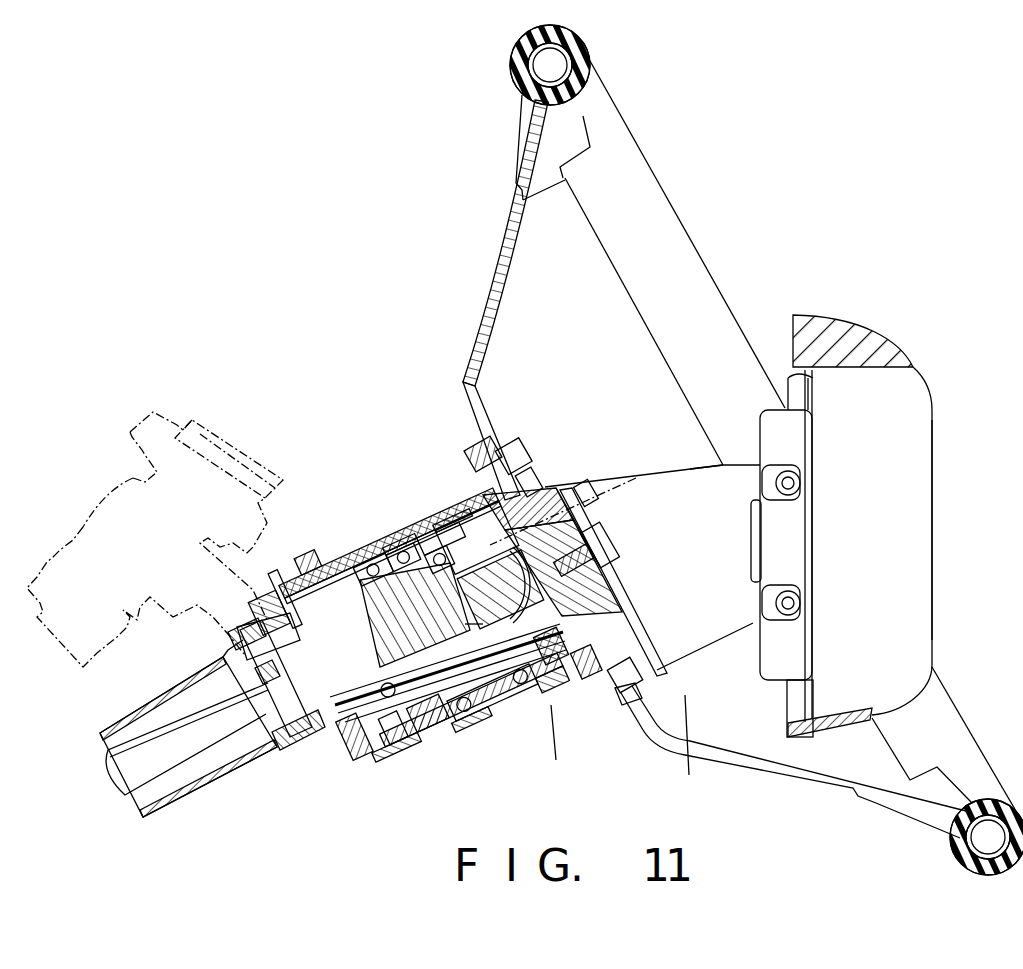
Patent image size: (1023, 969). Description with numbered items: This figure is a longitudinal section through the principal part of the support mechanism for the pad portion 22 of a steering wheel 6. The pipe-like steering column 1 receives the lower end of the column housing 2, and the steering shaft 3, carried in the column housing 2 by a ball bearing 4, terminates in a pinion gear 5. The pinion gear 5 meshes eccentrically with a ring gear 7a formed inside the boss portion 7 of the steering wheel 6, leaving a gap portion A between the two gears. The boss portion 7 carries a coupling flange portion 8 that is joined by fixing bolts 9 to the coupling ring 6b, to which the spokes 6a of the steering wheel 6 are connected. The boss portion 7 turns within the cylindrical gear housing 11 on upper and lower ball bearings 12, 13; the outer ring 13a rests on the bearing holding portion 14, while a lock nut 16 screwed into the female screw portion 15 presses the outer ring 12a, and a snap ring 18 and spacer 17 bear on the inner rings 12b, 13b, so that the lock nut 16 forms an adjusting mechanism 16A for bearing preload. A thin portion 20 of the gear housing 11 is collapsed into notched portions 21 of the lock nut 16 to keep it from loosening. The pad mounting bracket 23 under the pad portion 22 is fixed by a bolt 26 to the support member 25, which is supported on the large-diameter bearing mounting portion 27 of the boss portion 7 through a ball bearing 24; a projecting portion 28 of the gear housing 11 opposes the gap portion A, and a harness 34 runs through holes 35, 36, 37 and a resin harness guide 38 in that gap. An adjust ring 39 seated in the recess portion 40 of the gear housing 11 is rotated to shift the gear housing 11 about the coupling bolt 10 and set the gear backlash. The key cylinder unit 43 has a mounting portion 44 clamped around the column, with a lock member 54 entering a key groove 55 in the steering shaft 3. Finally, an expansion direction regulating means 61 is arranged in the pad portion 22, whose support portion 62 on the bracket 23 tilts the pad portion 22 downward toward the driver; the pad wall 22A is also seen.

The steering column 1 is at (197, 796).
The column housing 2 is at (356, 733).
The steering shaft 3 is at (148, 747).
The ball bearing 4 is at (300, 572).
The pinion gear 5 is at (398, 650).
The steering wheel 6 is at (960, 852).
The spokes 6a is at (498, 262).
The coupling ring 6b is at (630, 702).
The boss portion 7 is at (590, 658).
The ring gear 7a is at (498, 589).
The coupling flange portion 8 is at (470, 435).
The fixing bolts 9 is at (515, 440).
The coupling bolt 10 is at (290, 600).
The gear housing 11 is at (326, 548).
The ball bearing 12 is at (447, 545).
The outer ring 12a is at (457, 535).
The inner ring 12b is at (440, 560).
The ball bearing 13 is at (400, 565).
The outer ring 13a is at (370, 568).
The inner ring 13b is at (405, 555).
The bearing holding portion 14 is at (346, 562).
The female screw portion 15 is at (536, 690).
The lock nut 16 is at (565, 682).
The adjusting mechanism 16A is at (570, 745).
The spacer 17 is at (470, 705).
The snap ring 18 is at (500, 702).
The thin portion 20 is at (477, 538).
The notched portions 21 is at (618, 604).
The pad portion 22 is at (938, 420).
The bracket wall 22A is at (936, 530).
The pad mounting bracket 23 is at (697, 628).
The ball bearing 24 is at (522, 498).
The support member 25 is at (566, 500).
The bolt 26 is at (615, 550).
The bearing mounting portion 27 is at (528, 470).
The projecting portion 28 is at (468, 716).
The harness 34 is at (584, 499).
The through hole 35 is at (590, 510).
The through hole 36 is at (422, 722).
The through hole 37 is at (381, 742).
The harness guide 38 is at (492, 628).
The adjust ring 39 is at (400, 742).
The recess portion 40 is at (306, 555).
The key cylinder unit 43 is at (232, 634).
The mounting portion 44 is at (300, 750).
The lock member 54 is at (281, 660).
The key groove 55 is at (262, 690).
The expansion direction regulating means 61 is at (694, 741).
The support portion 62 is at (700, 472).
The gap portion A is at (474, 611).